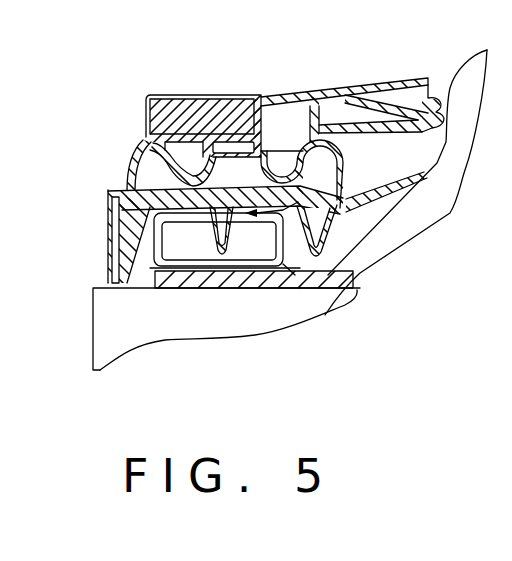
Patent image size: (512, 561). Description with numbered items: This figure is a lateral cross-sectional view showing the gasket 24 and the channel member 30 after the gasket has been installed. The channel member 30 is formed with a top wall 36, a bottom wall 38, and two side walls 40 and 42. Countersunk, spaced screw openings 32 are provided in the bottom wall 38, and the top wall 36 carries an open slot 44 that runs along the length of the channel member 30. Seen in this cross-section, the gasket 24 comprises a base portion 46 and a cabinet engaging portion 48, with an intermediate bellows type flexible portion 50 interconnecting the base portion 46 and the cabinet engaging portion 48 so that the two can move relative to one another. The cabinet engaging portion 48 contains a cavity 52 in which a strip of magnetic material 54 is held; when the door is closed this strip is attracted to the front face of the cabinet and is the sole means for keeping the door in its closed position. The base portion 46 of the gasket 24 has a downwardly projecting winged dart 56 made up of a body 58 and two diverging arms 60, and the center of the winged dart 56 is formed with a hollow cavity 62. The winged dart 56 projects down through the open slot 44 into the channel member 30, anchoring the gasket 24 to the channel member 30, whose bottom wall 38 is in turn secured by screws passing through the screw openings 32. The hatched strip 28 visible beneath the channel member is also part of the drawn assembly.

The gasket 24 is at (394, 200).
The base strip 28 is at (354, 277).
The channel member 30 is at (283, 206).
The screw openings 32 is at (226, 262).
The top wall 36 is at (351, 278).
The bottom wall 38 is at (168, 289).
The side wall 40 is at (295, 275).
The side wall 42 is at (117, 283).
The open slot 44 is at (140, 160).
The base portion 46 is at (358, 225).
The cabinet engaging portion 48 is at (129, 118).
The bellows type flexible portion 50 is at (362, 151).
The cavity 52 is at (183, 97).
The strip of magnetic material 54 is at (213, 100).
The winged dart 56 is at (237, 220).
The body 58 is at (105, 193).
The diverging arms 60 is at (212, 220).
The hollow cavity 62 is at (233, 205).